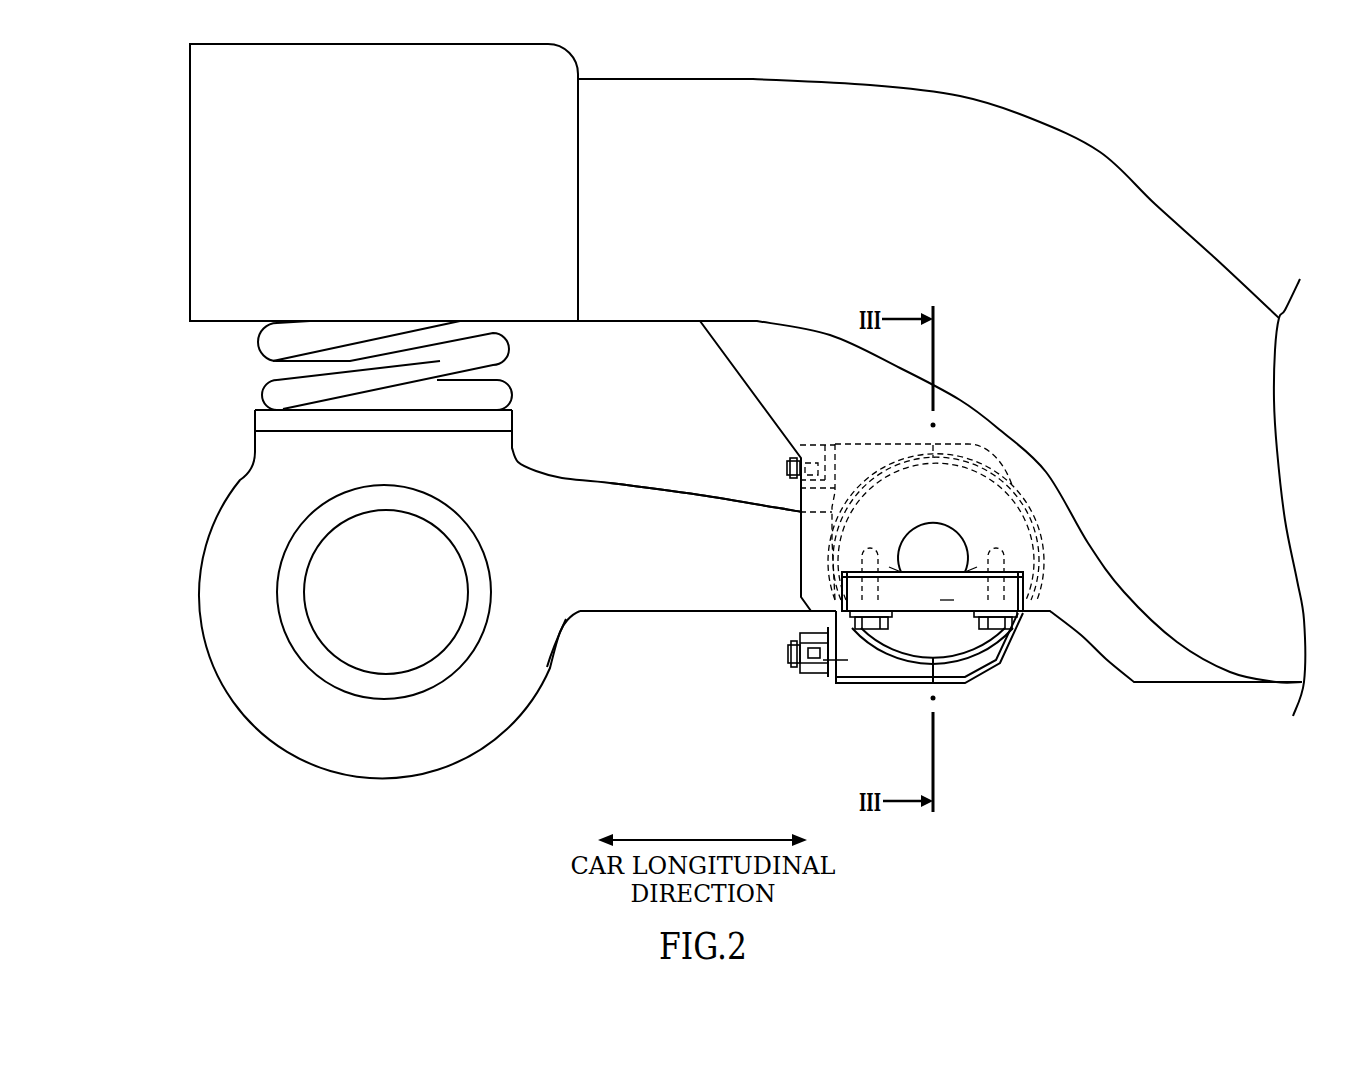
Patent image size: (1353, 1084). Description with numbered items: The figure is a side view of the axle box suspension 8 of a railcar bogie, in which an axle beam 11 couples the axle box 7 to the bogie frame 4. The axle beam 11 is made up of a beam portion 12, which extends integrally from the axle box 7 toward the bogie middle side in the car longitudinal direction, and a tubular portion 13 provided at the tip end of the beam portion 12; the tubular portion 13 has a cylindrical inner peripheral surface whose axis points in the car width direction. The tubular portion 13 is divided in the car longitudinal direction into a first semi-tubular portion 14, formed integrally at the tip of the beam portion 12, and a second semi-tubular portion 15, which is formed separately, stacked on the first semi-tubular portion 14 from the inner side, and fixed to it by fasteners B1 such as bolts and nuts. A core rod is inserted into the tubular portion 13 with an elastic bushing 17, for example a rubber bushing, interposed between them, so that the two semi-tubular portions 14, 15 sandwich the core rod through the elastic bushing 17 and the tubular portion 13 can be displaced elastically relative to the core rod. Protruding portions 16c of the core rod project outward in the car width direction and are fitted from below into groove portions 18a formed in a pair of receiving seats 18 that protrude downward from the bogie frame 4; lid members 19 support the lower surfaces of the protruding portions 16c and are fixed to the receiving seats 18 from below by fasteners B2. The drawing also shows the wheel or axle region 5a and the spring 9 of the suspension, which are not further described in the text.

The bogie frame 4 is at (1160, 204).
The hub 5a is at (328, 621).
The axle box 7 is at (200, 598).
The axle box suspension 8 is at (697, 693).
The coil spring 9 is at (259, 343).
The axle beam 11 is at (640, 615).
The beam portion 12 is at (722, 492).
The tubular portion 13 is at (900, 682).
The first semi-tubular portion 14 is at (847, 658).
The second semi-tubular portion 15 is at (1018, 643).
The protruding portions 16c is at (948, 548).
The elastic bushing 17 is at (1014, 539).
The receiving seats 18 is at (770, 375).
The groove portions 18a is at (933, 537).
The lid members 19 is at (947, 600).
The fasteners B1 is at (795, 640).
The fasteners B2 is at (870, 629).